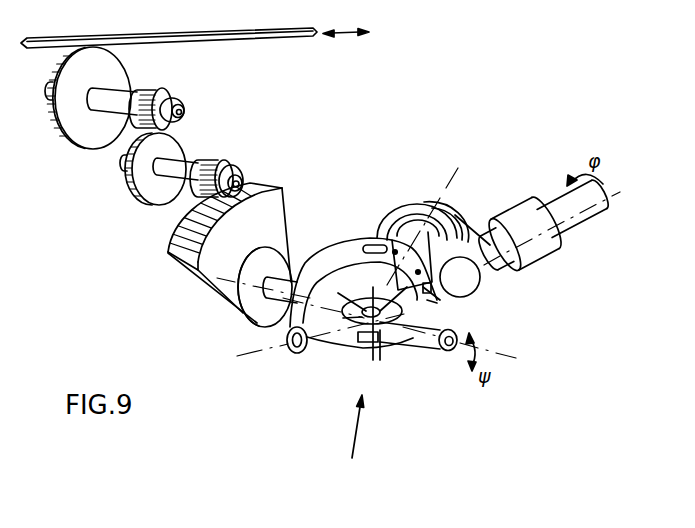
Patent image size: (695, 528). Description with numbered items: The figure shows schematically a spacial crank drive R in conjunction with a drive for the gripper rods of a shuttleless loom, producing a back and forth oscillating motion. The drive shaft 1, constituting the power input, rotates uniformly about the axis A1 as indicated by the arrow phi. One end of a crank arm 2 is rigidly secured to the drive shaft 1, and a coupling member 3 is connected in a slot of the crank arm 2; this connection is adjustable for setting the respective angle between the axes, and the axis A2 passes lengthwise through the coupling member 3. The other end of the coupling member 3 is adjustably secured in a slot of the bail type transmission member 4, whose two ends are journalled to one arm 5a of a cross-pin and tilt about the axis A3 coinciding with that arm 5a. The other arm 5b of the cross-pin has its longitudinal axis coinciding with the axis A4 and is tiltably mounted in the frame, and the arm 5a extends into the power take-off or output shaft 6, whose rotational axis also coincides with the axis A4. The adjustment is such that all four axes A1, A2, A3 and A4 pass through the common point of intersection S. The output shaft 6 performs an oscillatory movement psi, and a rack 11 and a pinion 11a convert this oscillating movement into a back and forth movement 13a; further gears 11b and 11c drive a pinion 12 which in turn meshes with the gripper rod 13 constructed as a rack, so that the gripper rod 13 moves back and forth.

The drive shaft 1 is at (580, 225).
The crank arm 2 is at (400, 205).
The coupling member 3 is at (432, 180).
The transmission member 4 is at (343, 250).
The arm of the cross-pin 5a is at (336, 346).
The arm of the cross-pin 5b is at (410, 348).
The output shaft 6 is at (286, 283).
The rack 11 is at (192, 264).
The pinion 11a is at (232, 162).
The gear 11b is at (143, 189).
The gear 11c is at (163, 95).
The pinion 12 is at (88, 130).
The gripper rod 13 is at (249, 37).
The back and forth movement 13a is at (345, 34).
The axis A1 is at (563, 216).
The axis A2 is at (433, 218).
The axis A3 is at (304, 345).
The axis A4 is at (412, 337).
The common junction point S is at (372, 338).
The spacial crank drive R is at (354, 442).